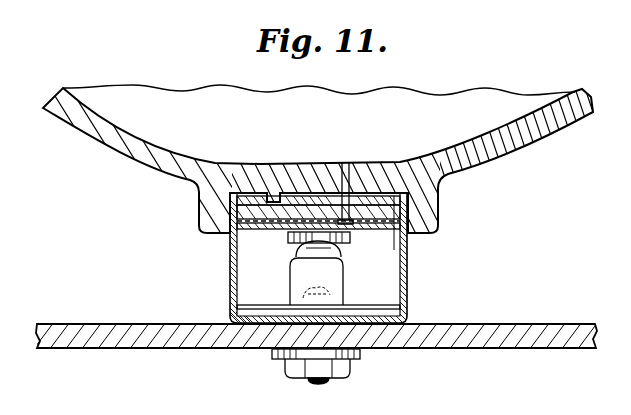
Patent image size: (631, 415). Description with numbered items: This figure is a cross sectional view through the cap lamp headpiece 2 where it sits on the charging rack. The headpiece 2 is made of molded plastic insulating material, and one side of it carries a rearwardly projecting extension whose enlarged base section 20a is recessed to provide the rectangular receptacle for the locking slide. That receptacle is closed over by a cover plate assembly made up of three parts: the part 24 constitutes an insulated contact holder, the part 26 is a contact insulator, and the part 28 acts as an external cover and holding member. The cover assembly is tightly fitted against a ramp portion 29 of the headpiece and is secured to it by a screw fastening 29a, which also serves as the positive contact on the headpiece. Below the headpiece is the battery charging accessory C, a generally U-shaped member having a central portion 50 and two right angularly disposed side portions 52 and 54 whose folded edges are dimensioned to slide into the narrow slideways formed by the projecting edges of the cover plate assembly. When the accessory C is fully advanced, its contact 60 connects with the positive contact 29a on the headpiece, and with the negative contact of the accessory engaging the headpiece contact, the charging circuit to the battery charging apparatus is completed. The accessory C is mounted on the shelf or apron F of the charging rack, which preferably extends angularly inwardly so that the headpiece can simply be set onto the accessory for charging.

The headpiece 2 is at (551, 131).
The enlarged base section 20a is at (425, 207).
The insulated contact holder 24 is at (233, 230).
The contact insulator 26 is at (360, 233).
The external cover and holding member 28 is at (393, 236).
The ramp portion 29 is at (297, 203).
The screw fastening 29a is at (306, 255).
The central portion 50 is at (270, 325).
The side portion 52 is at (401, 272).
The side portion 54 is at (234, 294).
The contact 60 is at (290, 282).
The battery charging accessory C is at (410, 297).
The shelf or apron F is at (472, 330).